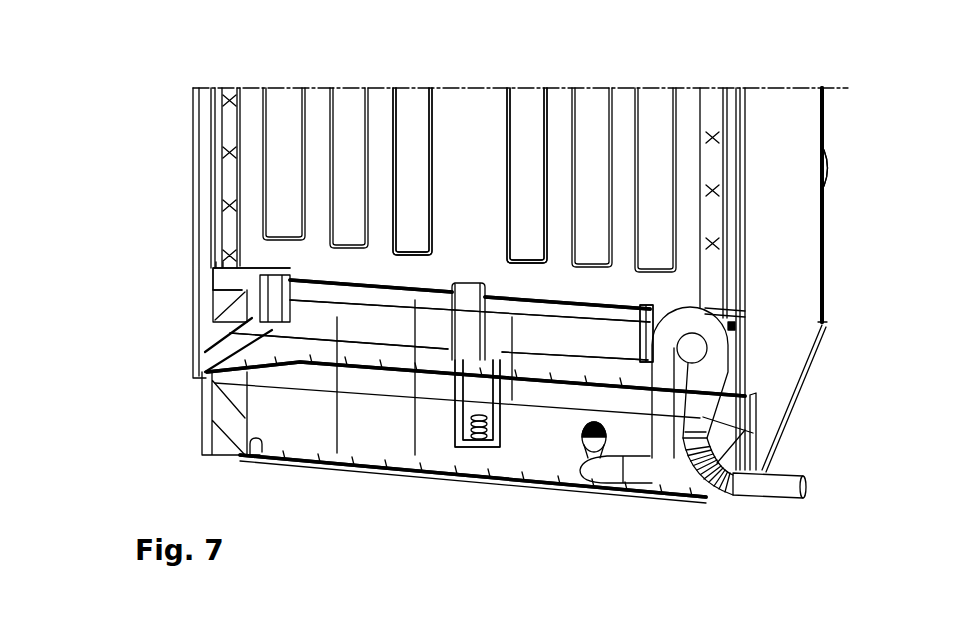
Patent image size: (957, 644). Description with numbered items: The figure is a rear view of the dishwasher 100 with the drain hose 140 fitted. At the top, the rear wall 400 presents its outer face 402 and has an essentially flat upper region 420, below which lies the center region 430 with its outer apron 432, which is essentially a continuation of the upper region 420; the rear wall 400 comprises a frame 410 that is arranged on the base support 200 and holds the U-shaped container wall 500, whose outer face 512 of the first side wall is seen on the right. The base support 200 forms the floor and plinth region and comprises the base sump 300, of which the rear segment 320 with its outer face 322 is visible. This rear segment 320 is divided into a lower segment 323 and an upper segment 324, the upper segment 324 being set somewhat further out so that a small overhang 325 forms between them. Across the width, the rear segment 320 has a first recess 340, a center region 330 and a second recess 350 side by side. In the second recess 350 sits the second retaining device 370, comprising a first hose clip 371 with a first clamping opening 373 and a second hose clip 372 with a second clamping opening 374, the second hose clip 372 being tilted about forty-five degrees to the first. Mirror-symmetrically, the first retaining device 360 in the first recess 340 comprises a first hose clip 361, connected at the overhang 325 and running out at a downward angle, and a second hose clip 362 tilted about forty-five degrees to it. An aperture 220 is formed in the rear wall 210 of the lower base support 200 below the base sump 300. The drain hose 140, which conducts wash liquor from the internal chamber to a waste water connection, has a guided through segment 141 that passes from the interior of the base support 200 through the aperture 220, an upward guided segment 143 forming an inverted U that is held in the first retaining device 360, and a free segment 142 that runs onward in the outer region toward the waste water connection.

The dishwasher 100 is at (138, 102).
The frame 410 is at (218, 100).
The rear wall 400 is at (455, 103).
The outer face of rear wall 402 is at (412, 171).
The upper region of rear wall 420 is at (527, 175).
The container wall 500 is at (797, 137).
The outer face of first side wall 512 is at (826, 168).
The center region of rear wall 430 is at (440, 292).
The outer apron 432 is at (477, 403).
The first retaining device 360 is at (668, 313).
The first hose clip 361 is at (646, 333).
The second retaining device 370 is at (245, 275).
The first hose clip of second retaining device 371 is at (251, 279).
The second recess 350 is at (250, 296).
The second hose clip of second retaining device 372 is at (220, 317).
The second clamping opening 374 is at (218, 352).
The first clamping opening 373 is at (225, 378).
The first recess 340 is at (715, 316).
The upward guided segment 143 is at (718, 345).
The second hose clip 362 is at (730, 378).
The guided through segment 141 is at (582, 434).
The base support 200 is at (272, 470).
The rear wall of base support 210 is at (473, 476).
The base sump 300 is at (340, 455).
The rear segment 320 is at (470, 294).
The outer face of rear segment 322 is at (470, 311).
The lower segment 323 is at (439, 346).
The center region of rear segment 330 is at (476, 379).
The upper segment 324 is at (416, 455).
The overhang 325 is at (512, 400).
The aperture 220 is at (608, 462).
The drain hose 140 is at (648, 470).
The free segment 142 is at (778, 486).